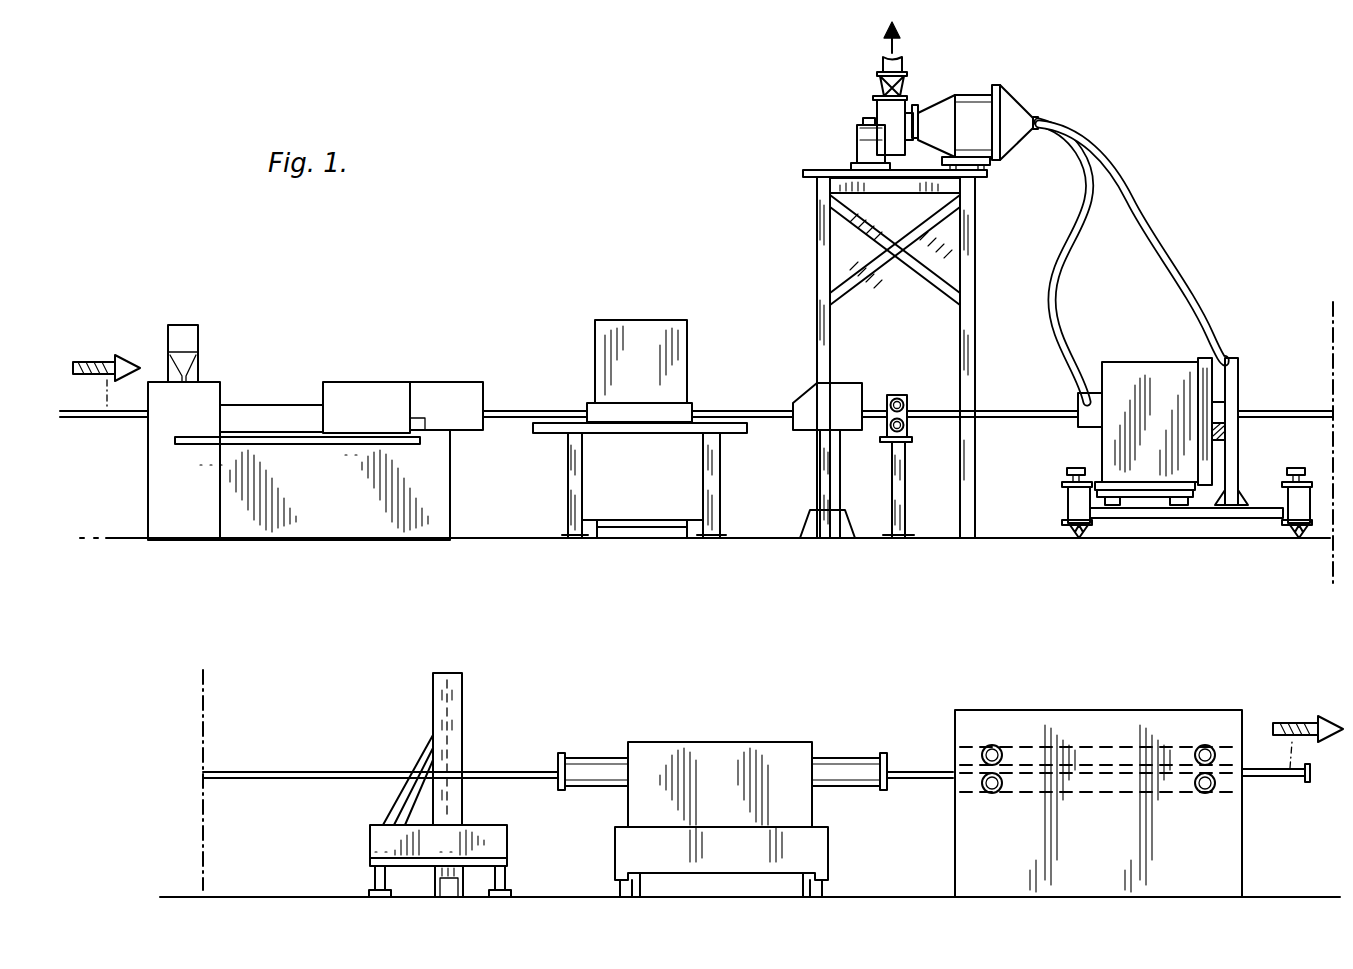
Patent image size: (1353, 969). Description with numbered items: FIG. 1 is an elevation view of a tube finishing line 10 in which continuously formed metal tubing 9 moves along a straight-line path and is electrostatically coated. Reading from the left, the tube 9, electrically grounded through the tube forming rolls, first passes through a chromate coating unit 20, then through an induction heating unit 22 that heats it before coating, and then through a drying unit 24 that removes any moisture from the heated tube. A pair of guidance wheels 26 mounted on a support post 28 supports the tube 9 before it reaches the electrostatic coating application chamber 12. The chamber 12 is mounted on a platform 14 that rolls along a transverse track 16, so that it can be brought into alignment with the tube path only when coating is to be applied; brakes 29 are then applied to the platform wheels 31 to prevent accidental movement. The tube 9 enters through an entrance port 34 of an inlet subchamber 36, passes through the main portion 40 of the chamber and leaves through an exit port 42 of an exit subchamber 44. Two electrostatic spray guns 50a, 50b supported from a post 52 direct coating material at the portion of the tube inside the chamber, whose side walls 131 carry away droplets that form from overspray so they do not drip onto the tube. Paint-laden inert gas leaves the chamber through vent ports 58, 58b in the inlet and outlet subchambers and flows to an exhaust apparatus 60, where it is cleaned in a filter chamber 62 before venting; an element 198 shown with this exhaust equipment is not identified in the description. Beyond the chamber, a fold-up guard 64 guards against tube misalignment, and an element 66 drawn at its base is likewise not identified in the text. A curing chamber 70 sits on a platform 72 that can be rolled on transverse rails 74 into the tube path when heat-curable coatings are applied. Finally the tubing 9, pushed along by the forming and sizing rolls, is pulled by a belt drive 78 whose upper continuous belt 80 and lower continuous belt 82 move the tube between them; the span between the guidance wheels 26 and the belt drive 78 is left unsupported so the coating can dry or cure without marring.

The tubing 9 is at (107, 412).
The tube finishing line 10 is at (415, 333).
The electrostatic coating application chamber 12 is at (1142, 355).
The platform 14 is at (1150, 520).
The transverse track 16 is at (1076, 540).
The chromate coating unit 20 is at (372, 364).
The induction heating unit 22 is at (655, 332).
The drying unit 24 is at (850, 398).
The guidance wheels 26 is at (908, 408).
The support post 28 is at (906, 460).
The brakes 29 is at (1062, 490).
The platform wheels 31 is at (1068, 527).
The entrance port 34 is at (1078, 422).
The inlet subchamber 36 is at (1086, 430).
The main portion 40 is at (1172, 380).
The exit port 42 is at (1228, 408).
The exit subchamber 44 is at (1228, 428).
The electrostatic spray gun 50a is at (1245, 368).
The electrostatic spray gun 50b is at (1240, 446).
The post 52 is at (1238, 468).
The vent port 58 is at (1077, 400).
The vent port 58b is at (1240, 412).
The exhaust apparatus 60 is at (932, 90).
The filter chamber 62 is at (976, 102).
The fold-up guard 64 is at (462, 708).
The column base 66 is at (507, 846).
The curing chamber 70 is at (705, 750).
The platform 72 is at (728, 845).
The transverse rails 74 is at (622, 890).
The belt drive 78 is at (1050, 722).
The upper continuous belt 80 is at (1020, 745).
The lower continuous belt 82 is at (1030, 800).
The side walls 131 is at (1182, 472).
The support tower 198 is at (976, 312).